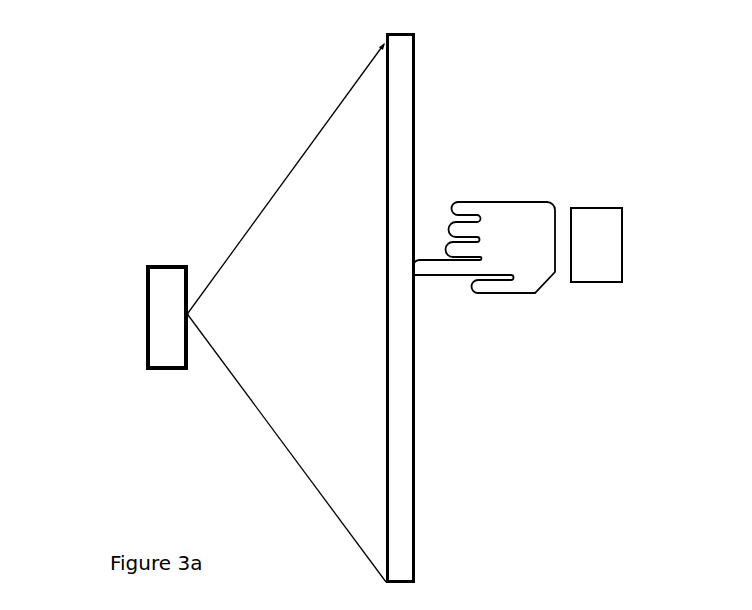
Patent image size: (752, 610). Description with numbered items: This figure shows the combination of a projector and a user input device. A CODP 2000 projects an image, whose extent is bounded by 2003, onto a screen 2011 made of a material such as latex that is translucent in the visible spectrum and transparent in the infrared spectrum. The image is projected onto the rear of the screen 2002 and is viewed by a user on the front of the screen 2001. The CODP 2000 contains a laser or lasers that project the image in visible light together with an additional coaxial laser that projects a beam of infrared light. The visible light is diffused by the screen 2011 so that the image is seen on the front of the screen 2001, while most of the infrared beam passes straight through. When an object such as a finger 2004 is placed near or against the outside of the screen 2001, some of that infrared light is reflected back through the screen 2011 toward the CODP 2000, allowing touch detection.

The CODP 2000 is at (109, 318).
The front of the screen 2001 is at (441, 308).
The rear of the screen 2002 is at (433, 308).
The image bounds 2003 is at (322, 129).
The finger 2004 is at (553, 294).
The screen 2011 is at (437, 441).